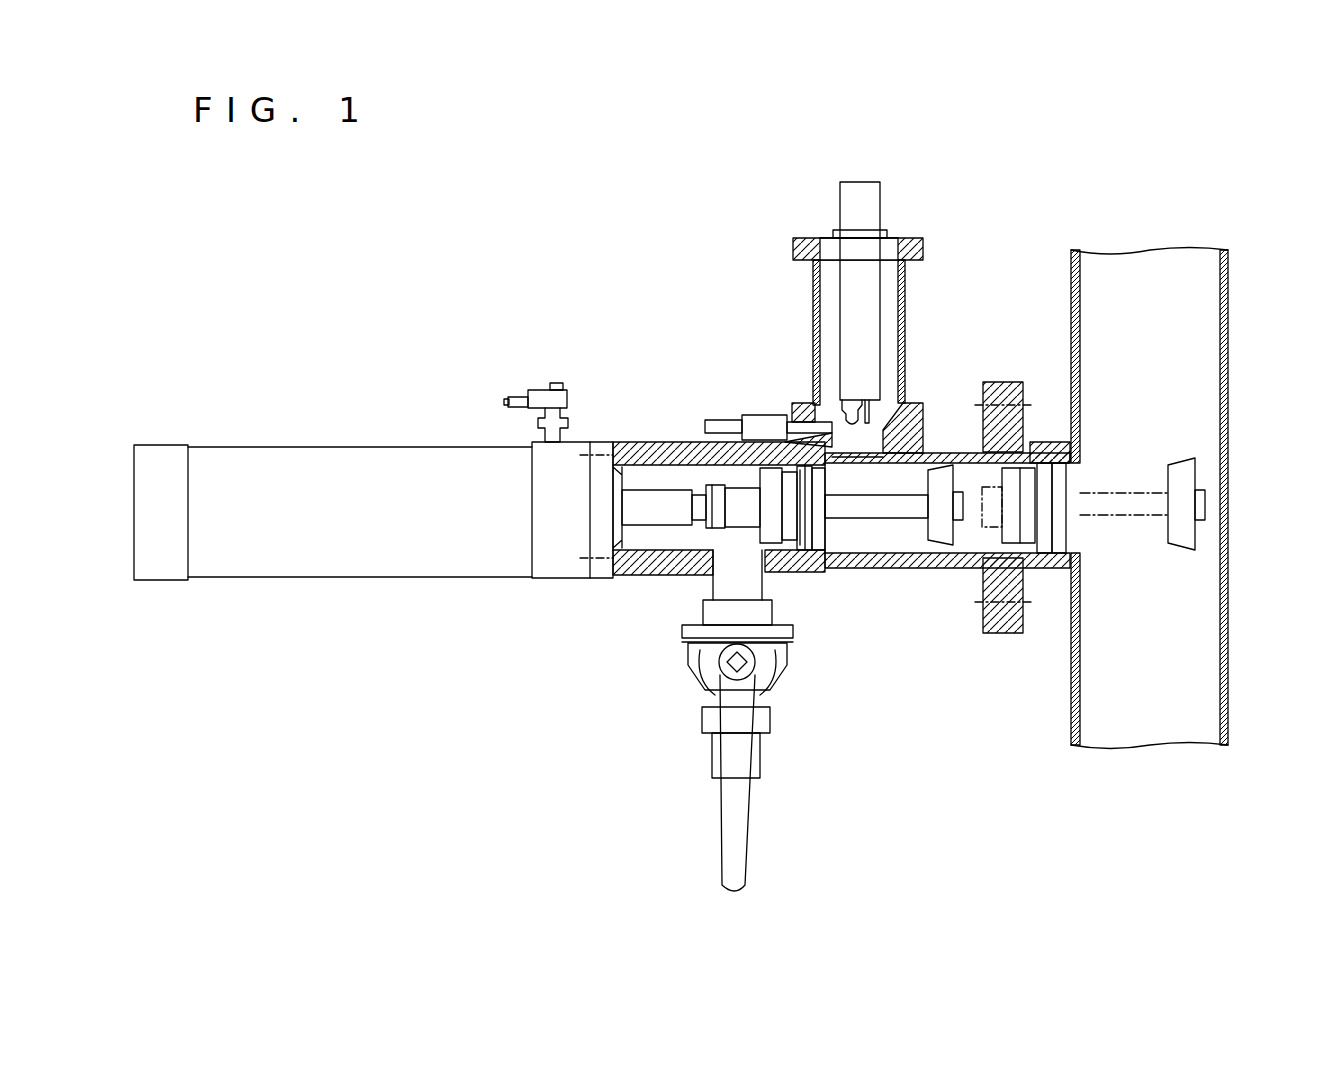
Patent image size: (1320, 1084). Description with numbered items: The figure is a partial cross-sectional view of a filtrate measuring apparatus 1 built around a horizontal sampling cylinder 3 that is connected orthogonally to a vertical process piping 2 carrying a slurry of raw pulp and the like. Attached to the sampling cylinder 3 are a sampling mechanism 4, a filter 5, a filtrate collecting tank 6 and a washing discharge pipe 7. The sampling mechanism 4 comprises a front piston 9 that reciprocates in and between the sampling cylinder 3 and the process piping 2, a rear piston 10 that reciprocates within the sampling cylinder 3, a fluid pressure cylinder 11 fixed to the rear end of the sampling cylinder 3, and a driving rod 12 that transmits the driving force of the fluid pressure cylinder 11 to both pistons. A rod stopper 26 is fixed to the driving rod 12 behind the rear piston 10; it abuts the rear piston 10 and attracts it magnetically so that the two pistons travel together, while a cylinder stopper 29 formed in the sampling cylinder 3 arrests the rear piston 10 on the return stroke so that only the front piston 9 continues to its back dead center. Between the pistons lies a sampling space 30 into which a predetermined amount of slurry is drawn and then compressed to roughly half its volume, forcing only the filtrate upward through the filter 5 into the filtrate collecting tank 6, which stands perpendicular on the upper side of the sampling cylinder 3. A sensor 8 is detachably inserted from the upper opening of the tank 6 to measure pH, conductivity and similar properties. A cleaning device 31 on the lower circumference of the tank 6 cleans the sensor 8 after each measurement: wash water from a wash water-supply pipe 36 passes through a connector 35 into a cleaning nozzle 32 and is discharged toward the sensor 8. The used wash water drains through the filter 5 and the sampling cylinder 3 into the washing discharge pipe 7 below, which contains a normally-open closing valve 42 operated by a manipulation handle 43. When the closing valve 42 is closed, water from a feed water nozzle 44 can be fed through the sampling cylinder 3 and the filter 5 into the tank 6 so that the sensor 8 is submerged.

The filtrate measuring apparatus 1 is at (573, 287).
The process piping 2 is at (1225, 353).
The sampling cylinder 3 is at (632, 558).
The sampling mechanism 4 is at (397, 398).
The filter 5 is at (863, 453).
The filtrate collecting tank 6 is at (813, 297).
The washing discharge pipe 7 is at (722, 580).
The sensor 8 is at (850, 403).
The front piston 9 is at (942, 540).
The rear piston 10 is at (818, 540).
The fluid pressure cylinder 11 is at (293, 558).
The driving rod 12 is at (913, 510).
The rod stopper 26 is at (800, 533).
The cylinder stopper 29 is at (772, 533).
The sampling space 30 is at (877, 533).
The cleaning device 31 is at (730, 340).
The cleaning nozzle 32 is at (800, 405).
The connector 35 is at (758, 420).
The wash water-supply pipe 36 is at (712, 420).
The closing valve 42 is at (700, 700).
The manipulation handle 43 is at (728, 823).
The feed water nozzle 44 is at (542, 392).